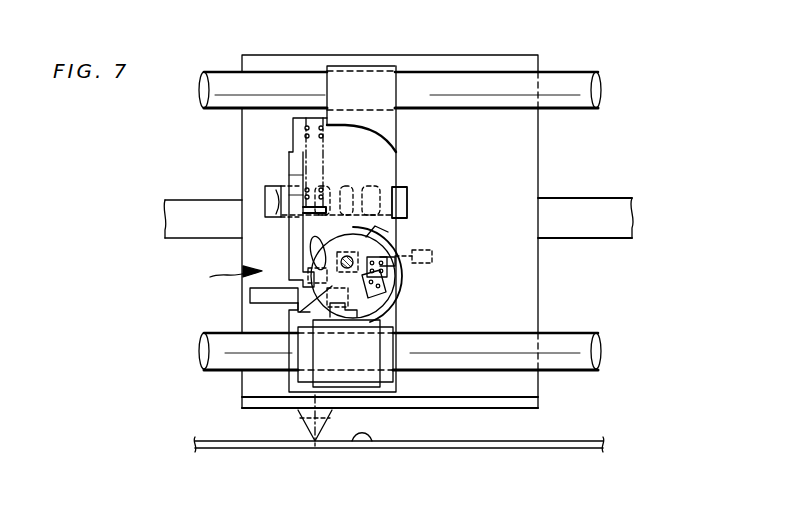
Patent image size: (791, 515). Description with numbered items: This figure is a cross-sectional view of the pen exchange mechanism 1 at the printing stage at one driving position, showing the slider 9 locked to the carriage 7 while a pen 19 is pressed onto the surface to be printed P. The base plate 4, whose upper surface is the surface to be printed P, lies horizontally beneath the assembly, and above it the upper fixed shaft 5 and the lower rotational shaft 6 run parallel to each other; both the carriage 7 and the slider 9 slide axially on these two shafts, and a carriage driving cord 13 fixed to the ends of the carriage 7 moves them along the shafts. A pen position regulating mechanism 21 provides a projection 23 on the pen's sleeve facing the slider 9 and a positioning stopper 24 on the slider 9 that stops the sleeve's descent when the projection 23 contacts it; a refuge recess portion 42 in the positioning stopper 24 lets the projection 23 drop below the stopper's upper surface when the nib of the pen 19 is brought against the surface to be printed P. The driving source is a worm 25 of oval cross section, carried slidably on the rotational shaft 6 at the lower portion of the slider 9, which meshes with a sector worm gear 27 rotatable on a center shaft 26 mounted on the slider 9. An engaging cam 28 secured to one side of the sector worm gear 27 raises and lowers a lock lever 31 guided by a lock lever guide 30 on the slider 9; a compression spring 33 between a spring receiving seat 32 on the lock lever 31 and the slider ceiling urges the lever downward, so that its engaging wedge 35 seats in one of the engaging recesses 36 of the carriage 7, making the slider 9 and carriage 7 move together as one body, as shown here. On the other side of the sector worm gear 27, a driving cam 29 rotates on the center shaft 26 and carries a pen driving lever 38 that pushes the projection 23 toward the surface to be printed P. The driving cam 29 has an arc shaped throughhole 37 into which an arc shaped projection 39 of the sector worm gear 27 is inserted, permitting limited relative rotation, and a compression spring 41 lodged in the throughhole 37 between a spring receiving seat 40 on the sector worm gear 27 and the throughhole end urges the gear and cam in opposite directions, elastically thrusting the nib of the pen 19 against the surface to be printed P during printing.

The pen exchange mechanism 1 is at (552, 50).
The base plate 4 is at (496, 448).
The upper fixed shaft 5 is at (599, 89).
The lower rotational shaft 6 is at (599, 351).
The carriage 7 is at (447, 60).
The slider 9 is at (364, 66).
The carriage driving cord 13 is at (595, 222).
The pen 19 is at (313, 433).
The pen position regulating mechanism 21 is at (222, 278).
The projection 23 is at (305, 270).
The positioning stopper 24 is at (250, 295).
The worm 25 is at (347, 387).
The center shaft 26 is at (407, 218).
The sector worm gear 27 is at (407, 195).
The engaging cam 28 is at (296, 314).
The driving cam 29 is at (364, 375).
The lock lever guide 30 is at (293, 140).
The lock lever 31 is at (292, 152).
The spring receiving seat 32 is at (350, 258).
The compression spring 33 is at (319, 124).
The engaging wedge 35 is at (288, 188).
The engaging recess 36 is at (264, 188).
The arc shaped throughhole 37 is at (326, 242).
The pen driving lever 38 is at (265, 214).
The arc shaped projection 39 is at (390, 280).
The spring receiving seat 40 is at (382, 292).
The compression spring 41 is at (390, 267).
The refuge recess portion 42 is at (330, 320).
The surface to be printed P is at (365, 438).